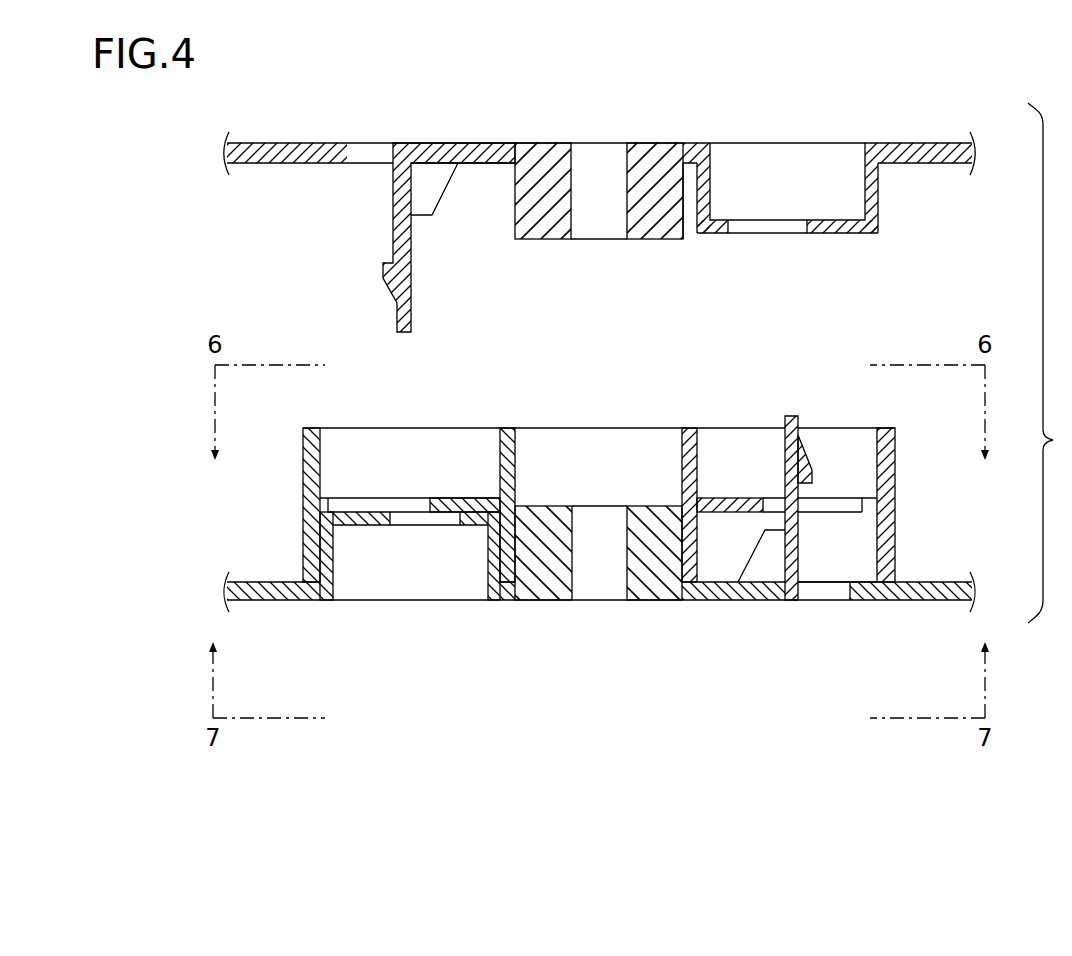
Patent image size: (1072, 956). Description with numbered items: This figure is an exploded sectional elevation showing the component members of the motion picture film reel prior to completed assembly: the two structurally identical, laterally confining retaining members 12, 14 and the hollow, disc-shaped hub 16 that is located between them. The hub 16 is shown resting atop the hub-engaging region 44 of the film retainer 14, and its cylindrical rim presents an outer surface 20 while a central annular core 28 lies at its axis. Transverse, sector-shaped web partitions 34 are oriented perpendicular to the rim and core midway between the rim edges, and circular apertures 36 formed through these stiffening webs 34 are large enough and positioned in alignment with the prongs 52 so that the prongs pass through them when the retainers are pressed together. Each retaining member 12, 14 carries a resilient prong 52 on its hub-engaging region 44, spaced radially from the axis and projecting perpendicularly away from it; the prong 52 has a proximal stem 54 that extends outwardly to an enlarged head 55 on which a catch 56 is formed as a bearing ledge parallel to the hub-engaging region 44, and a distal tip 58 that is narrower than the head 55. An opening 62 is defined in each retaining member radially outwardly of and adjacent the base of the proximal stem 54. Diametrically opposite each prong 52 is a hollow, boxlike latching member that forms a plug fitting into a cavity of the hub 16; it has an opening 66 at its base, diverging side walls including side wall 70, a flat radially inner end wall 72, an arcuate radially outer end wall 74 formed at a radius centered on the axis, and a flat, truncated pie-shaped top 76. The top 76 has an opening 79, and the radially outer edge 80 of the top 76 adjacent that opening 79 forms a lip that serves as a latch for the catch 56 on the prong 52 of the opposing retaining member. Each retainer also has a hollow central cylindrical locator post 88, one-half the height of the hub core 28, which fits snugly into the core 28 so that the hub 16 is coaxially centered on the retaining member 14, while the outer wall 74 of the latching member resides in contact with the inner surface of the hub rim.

The laterally confining retaining member 12 is at (438, 110).
The laterally confining retaining member 14 is at (909, 612).
The hub 16 is at (292, 471).
The outer surface 20 is at (895, 447).
The core 28 is at (506, 420).
The web partition 34 is at (464, 498).
The aperture 36 is at (330, 500).
The hub-engaging region 44 is at (460, 165).
The resilient prong 52 is at (426, 272).
The proximal stem 54 is at (393, 197).
The enlarged head 55 is at (385, 288).
The catch 56 is at (388, 262).
The distal tip 58 is at (411, 318).
The opening 62 is at (360, 152).
The opening 66 is at (335, 587).
The side wall 70 is at (865, 165).
The radial inner end wall 72 is at (690, 210).
The radial outer end wall 74 is at (878, 195).
The top 76 is at (840, 236).
The opening 79 is at (735, 228).
The radially outer edge 80 is at (823, 236).
The locator post 88 is at (636, 256).